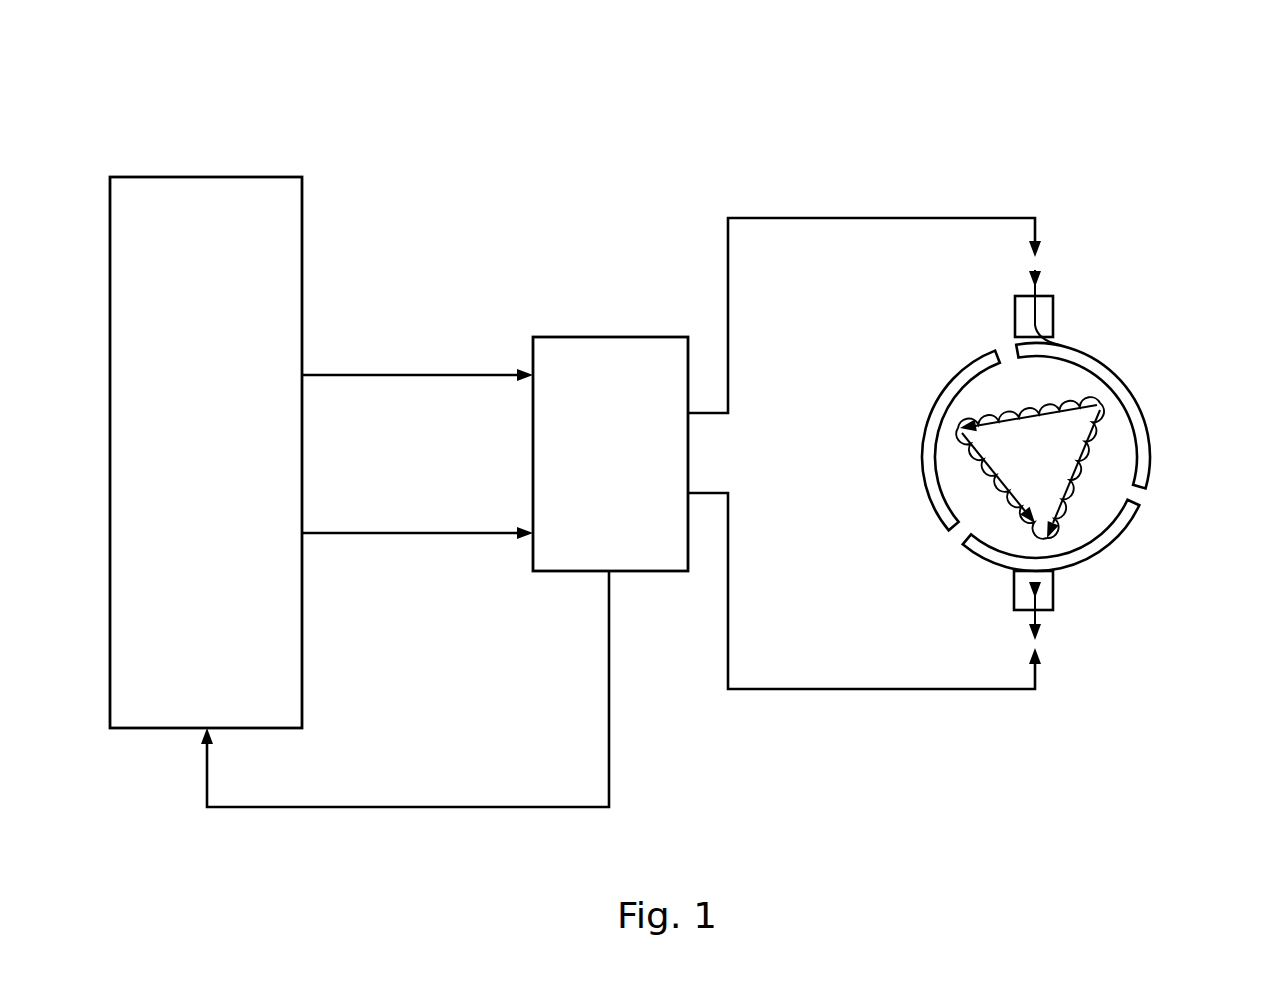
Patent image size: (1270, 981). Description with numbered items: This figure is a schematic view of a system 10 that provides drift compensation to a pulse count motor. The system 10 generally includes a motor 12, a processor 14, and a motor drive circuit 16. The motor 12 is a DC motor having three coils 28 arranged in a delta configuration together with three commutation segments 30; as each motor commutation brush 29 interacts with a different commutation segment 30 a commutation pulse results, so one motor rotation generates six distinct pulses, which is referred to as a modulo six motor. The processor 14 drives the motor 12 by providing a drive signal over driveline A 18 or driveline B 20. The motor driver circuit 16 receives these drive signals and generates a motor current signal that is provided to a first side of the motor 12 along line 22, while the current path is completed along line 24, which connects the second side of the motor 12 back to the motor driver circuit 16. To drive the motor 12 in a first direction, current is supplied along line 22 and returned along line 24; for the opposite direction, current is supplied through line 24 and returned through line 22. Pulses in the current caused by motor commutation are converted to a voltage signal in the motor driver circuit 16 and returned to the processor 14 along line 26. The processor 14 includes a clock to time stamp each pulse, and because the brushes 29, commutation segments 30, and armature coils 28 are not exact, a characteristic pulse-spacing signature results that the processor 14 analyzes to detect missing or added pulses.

The system 10 is at (620, 95).
The motor 12 is at (1112, 322).
The processor 14 is at (306, 224).
The motor drive circuit 16 is at (610, 337).
The driveline A 18 is at (470, 377).
The driveline B 20 is at (470, 535).
The line 22 is at (760, 218).
The line 24 is at (768, 689).
The line 26 is at (466, 810).
The coils 28 is at (963, 397).
The motor commutation brush 29 is at (1052, 296).
The commutation segments 30 is at (1138, 397).